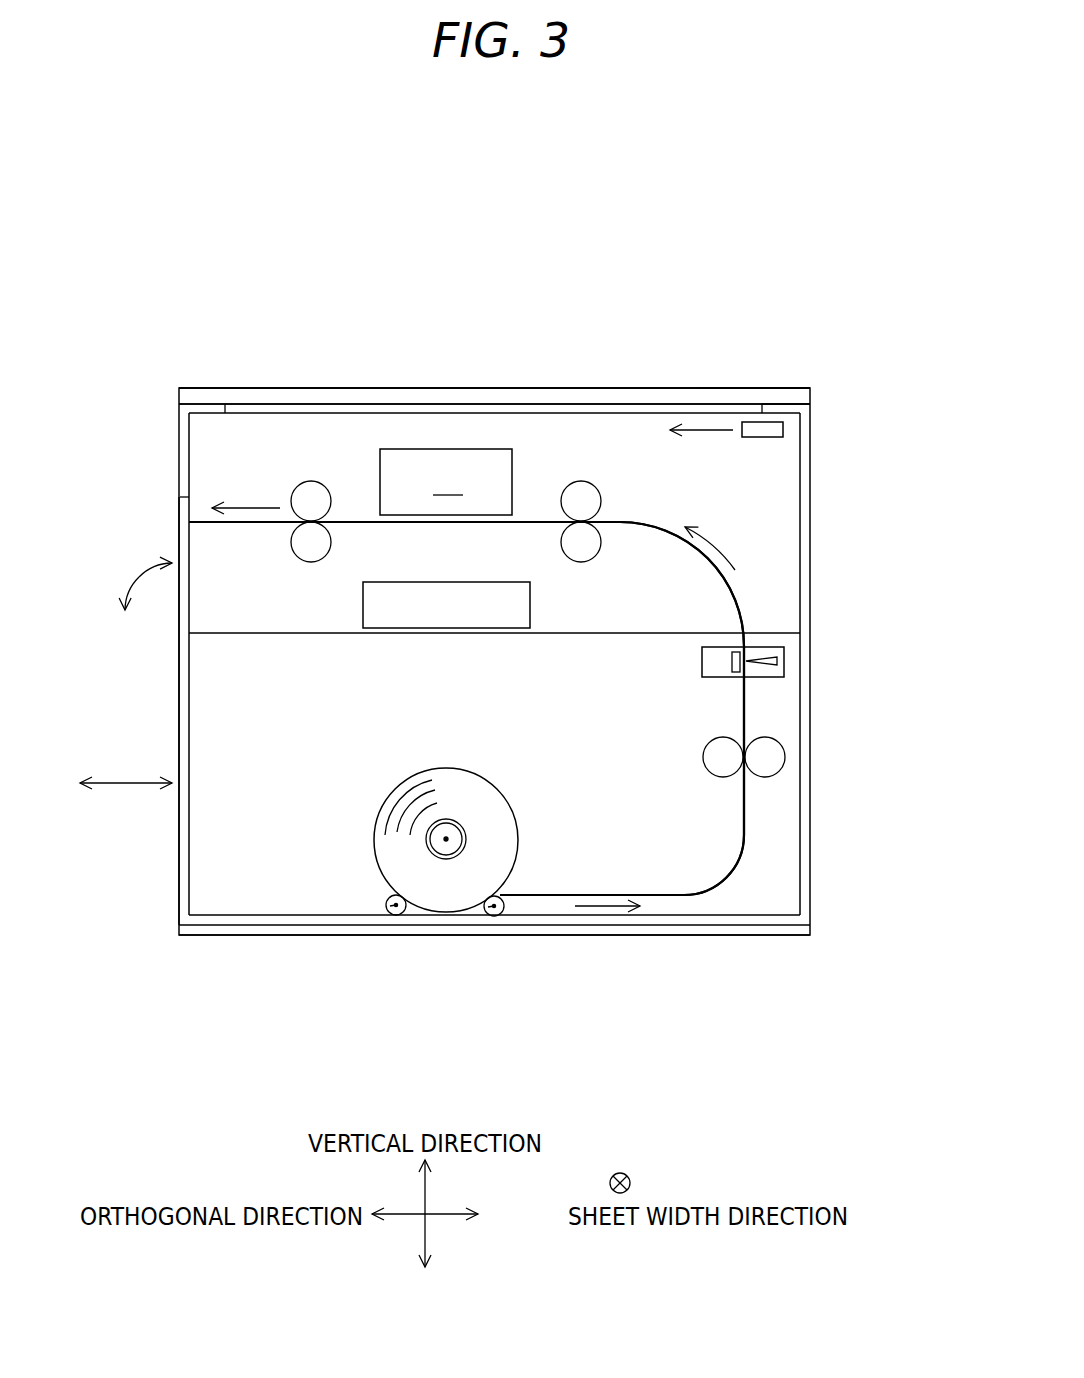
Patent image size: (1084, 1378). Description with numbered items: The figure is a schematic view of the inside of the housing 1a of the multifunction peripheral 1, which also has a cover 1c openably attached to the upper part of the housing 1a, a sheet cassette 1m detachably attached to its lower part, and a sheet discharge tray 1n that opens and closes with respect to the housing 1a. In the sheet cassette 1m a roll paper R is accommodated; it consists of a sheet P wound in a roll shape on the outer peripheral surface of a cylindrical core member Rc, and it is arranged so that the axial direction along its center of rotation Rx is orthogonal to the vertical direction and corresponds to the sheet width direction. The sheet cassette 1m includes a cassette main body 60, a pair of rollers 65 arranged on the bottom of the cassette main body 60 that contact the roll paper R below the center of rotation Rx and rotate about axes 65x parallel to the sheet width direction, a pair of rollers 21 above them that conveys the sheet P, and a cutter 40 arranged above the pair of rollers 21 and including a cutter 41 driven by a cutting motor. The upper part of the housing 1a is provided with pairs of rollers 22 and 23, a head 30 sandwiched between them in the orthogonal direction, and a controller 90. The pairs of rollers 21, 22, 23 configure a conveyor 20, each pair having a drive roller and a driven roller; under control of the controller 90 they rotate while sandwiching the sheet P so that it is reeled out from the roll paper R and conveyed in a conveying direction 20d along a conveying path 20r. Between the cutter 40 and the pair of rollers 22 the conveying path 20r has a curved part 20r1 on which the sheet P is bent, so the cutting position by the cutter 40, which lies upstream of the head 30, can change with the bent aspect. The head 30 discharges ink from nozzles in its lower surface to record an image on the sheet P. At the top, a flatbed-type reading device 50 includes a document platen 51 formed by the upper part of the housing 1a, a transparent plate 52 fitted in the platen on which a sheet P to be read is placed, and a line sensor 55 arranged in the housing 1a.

The multifunction peripheral 1 is at (657, 260).
The housing 1a is at (805, 503).
The cover 1c is at (272, 395).
The sheet cassette 1m is at (178, 752).
The sheet discharge tray 1n is at (177, 542).
The conveyor 20 is at (655, 500).
The conveying direction 20d is at (710, 562).
The conveying path 20r is at (744, 710).
The curved part 20r1 is at (714, 573).
The pair of rollers 21 is at (725, 777).
The pair of rollers 22 is at (601, 530).
The pair of rollers 23 is at (331, 530).
The head 30 is at (446, 482).
The cutter 40 is at (784, 660).
The cutter 41 is at (770, 655).
The reading device 50 is at (267, 915).
The document platen 51 is at (793, 409).
The transparent plate 52 is at (497, 410).
The line sensor 55 is at (762, 437).
The cassette main body 60 is at (760, 382).
The pair of rollers 65 is at (403, 912).
The axes 65x is at (386, 906).
The controller 90 is at (530, 602).
The sheet P is at (605, 895).
The roll paper R is at (507, 797).
The core member Rc is at (462, 850).
The center of rotation Rx is at (446, 839).